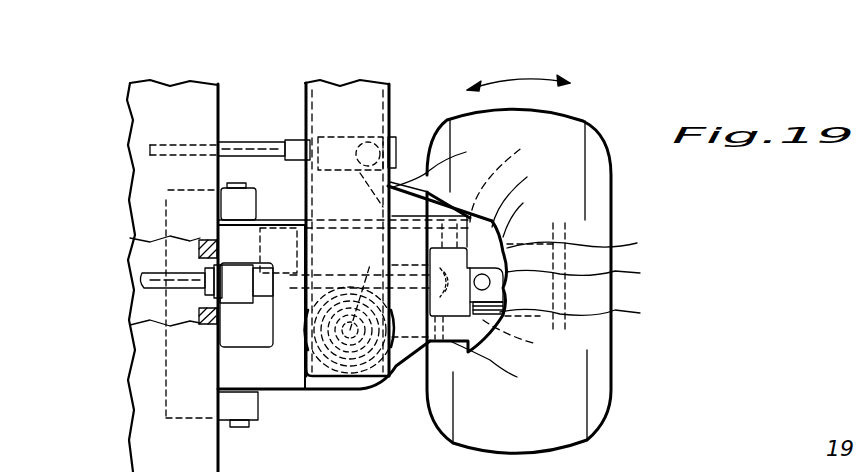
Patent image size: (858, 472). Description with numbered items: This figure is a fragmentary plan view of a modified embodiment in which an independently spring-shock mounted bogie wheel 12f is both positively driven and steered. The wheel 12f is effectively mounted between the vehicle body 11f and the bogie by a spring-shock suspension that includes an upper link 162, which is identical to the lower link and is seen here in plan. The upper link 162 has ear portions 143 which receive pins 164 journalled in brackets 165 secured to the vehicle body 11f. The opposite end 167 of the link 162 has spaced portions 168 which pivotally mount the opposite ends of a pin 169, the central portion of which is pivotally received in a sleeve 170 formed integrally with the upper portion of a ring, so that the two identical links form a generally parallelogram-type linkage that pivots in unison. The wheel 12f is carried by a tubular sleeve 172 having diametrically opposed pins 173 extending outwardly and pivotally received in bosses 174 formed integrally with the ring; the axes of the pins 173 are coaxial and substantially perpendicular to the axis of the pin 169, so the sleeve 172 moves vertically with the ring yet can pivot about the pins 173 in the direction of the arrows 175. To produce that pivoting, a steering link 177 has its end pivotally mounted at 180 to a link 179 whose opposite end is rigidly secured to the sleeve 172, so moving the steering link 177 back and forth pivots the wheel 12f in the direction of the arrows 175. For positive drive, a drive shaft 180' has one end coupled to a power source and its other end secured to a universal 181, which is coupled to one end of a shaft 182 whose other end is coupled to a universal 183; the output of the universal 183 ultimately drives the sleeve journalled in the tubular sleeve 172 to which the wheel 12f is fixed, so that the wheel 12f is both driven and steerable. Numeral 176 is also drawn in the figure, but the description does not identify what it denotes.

The vehicle body 11f is at (203, 88).
The wheel 12f is at (607, 380).
The ear portions 143 is at (228, 229).
The upper link 162 is at (297, 393).
The pins 164 is at (238, 183).
The brackets 165 is at (287, 193).
The opposite end 167 is at (453, 390).
The spaced portions 168 is at (511, 284).
The pin 169 is at (517, 257).
The sleeve 170 is at (536, 214).
The tubular sleeve 172 is at (579, 273).
The pins 173 is at (594, 316).
The bosses 174 is at (343, 398).
The arrows 175 is at (565, 79).
The roller 176 is at (310, 338).
The steering link 177 is at (188, 146).
The link 179 is at (367, 268).
The pivotal mounting 180 is at (379, 228).
The drive shaft 180' is at (177, 268).
The universal 181 is at (234, 293).
The shaft 182 is at (297, 256).
The universal 183 is at (438, 248).